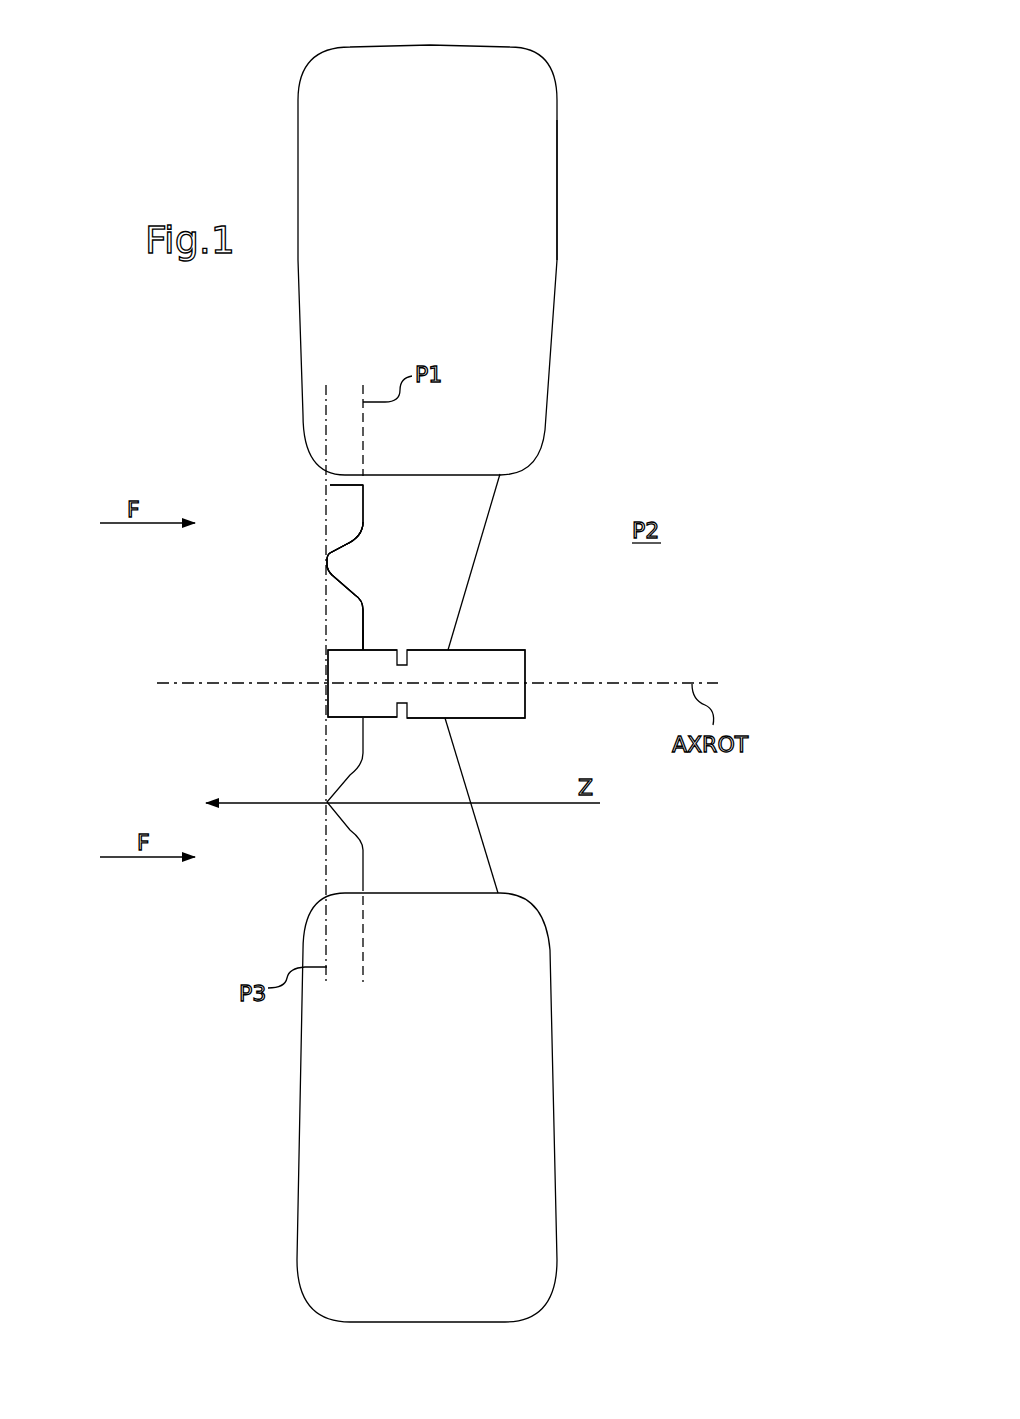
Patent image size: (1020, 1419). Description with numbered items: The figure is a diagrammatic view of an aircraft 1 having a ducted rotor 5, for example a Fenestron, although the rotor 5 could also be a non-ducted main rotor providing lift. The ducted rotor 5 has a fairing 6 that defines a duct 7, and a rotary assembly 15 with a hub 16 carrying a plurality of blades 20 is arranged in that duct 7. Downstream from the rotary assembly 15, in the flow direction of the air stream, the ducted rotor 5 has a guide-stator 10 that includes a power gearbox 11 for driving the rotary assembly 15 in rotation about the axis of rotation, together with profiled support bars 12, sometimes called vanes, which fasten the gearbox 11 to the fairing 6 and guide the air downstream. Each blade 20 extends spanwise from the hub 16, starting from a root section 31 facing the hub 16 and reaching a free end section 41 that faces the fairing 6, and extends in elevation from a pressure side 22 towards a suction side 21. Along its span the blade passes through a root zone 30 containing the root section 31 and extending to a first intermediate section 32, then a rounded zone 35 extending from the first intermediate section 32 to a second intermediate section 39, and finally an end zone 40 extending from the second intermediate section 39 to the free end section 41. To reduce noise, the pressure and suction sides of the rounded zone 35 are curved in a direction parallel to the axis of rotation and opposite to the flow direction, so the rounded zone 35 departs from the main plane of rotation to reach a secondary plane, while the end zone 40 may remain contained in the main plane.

The aircraft 1 is at (700, 26).
The ducted rotor 5 is at (658, 134).
The fairing 6 is at (557, 207).
The duct 7 is at (278, 493).
The guide-stator 10 is at (542, 667).
The power gearbox 11 is at (478, 703).
The support bars 12 is at (468, 583).
The rotary assembly 15 is at (255, 704).
The hub 16 is at (343, 693).
The blades 20 is at (276, 632).
The suction side 21 is at (318, 573).
The pressure side 22 is at (374, 613).
The root zone 30 is at (348, 638).
The root section 31 is at (367, 648).
The first intermediate section 32 is at (366, 606).
The rounded zone 35 is at (318, 548).
The second intermediate section 39 is at (363, 522).
The end zone 40 is at (382, 500).
The free end section 41 is at (337, 487).